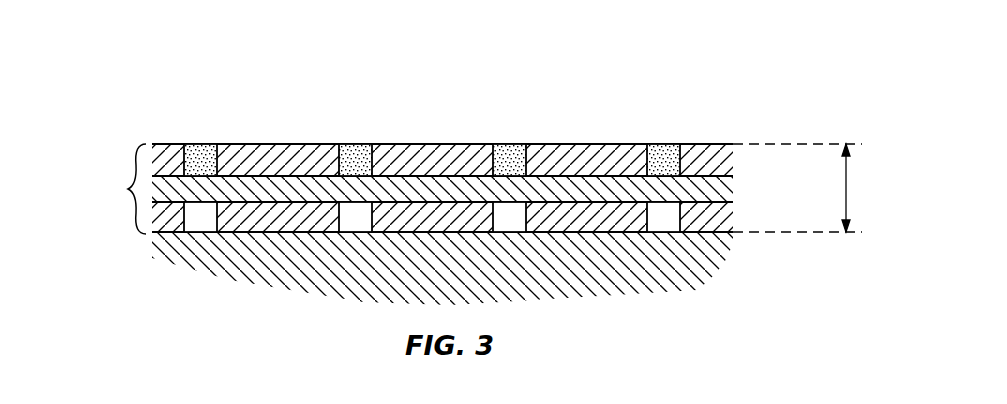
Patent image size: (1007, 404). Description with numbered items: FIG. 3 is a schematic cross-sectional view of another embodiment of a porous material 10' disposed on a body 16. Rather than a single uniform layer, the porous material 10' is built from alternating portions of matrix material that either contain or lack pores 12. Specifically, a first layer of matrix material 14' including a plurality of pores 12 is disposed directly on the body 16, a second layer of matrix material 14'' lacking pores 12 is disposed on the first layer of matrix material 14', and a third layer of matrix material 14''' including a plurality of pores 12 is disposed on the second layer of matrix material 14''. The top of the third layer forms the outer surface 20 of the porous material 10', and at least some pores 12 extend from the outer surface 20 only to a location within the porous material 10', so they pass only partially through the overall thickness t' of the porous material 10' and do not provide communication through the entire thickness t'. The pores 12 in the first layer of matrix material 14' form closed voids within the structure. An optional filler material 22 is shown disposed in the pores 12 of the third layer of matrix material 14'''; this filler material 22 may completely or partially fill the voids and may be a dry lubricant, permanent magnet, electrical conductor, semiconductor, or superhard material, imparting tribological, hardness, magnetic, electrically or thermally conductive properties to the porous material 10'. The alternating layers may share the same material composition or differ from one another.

The porous material 10' is at (99, 164).
The pores 12 is at (510, 158).
The first layer of matrix material 14' is at (484, 216).
The second layer of matrix material 14'' is at (486, 183).
The third layer of matrix material 14''' is at (442, 133).
The body 16 is at (597, 273).
The outer surface 20 is at (271, 144).
The filler material 22 is at (199, 143).
The thickness t' is at (801, 188).